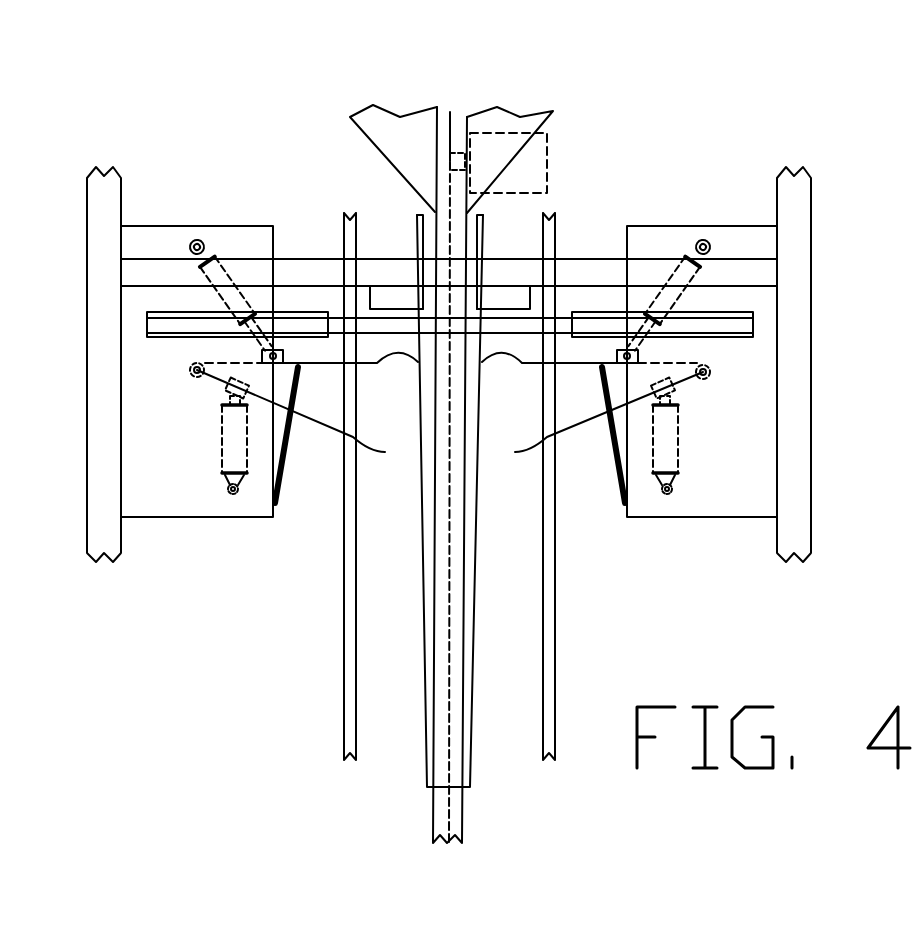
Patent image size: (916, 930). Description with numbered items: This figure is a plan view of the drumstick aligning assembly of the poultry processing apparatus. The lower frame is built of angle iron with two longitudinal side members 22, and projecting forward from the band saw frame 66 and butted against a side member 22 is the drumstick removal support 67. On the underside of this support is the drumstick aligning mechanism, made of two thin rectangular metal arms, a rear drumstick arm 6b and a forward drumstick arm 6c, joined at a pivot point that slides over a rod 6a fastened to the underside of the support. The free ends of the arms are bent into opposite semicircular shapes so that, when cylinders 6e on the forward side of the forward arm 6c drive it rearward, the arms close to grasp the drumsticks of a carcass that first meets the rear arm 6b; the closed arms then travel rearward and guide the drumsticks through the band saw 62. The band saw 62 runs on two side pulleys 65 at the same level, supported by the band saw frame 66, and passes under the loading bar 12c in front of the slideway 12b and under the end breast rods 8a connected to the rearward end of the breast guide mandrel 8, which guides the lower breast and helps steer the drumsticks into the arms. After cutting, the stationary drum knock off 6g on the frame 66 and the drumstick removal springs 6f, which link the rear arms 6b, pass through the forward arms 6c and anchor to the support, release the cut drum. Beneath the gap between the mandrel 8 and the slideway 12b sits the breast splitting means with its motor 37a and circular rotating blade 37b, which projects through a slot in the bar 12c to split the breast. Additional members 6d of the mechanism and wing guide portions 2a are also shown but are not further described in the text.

The vertical guide posts 2a is at (550, 711).
The rod 6a is at (707, 377).
The rear drumstick arm 6b is at (523, 363).
The forward drumstick arm 6c is at (573, 427).
The upper hydraulic cylinders 6d is at (675, 262).
The cylinders 6e is at (668, 465).
The drumstick removal springs 6f is at (617, 493).
The drum knock off 6g is at (507, 300).
The breast guide mandrel 8 is at (427, 643).
The end breast rods 8a is at (418, 223).
The slideway 12b is at (408, 142).
The loading bar 12c is at (448, 818).
The longitudinal side members 22 is at (103, 527).
The motor 37a is at (537, 168).
The circular rotating blade 37b is at (450, 115).
The band saw 62 is at (742, 325).
The side pulleys 65 is at (752, 338).
The band saw frame 66 is at (748, 272).
The drumstick removal support 67 is at (173, 500).